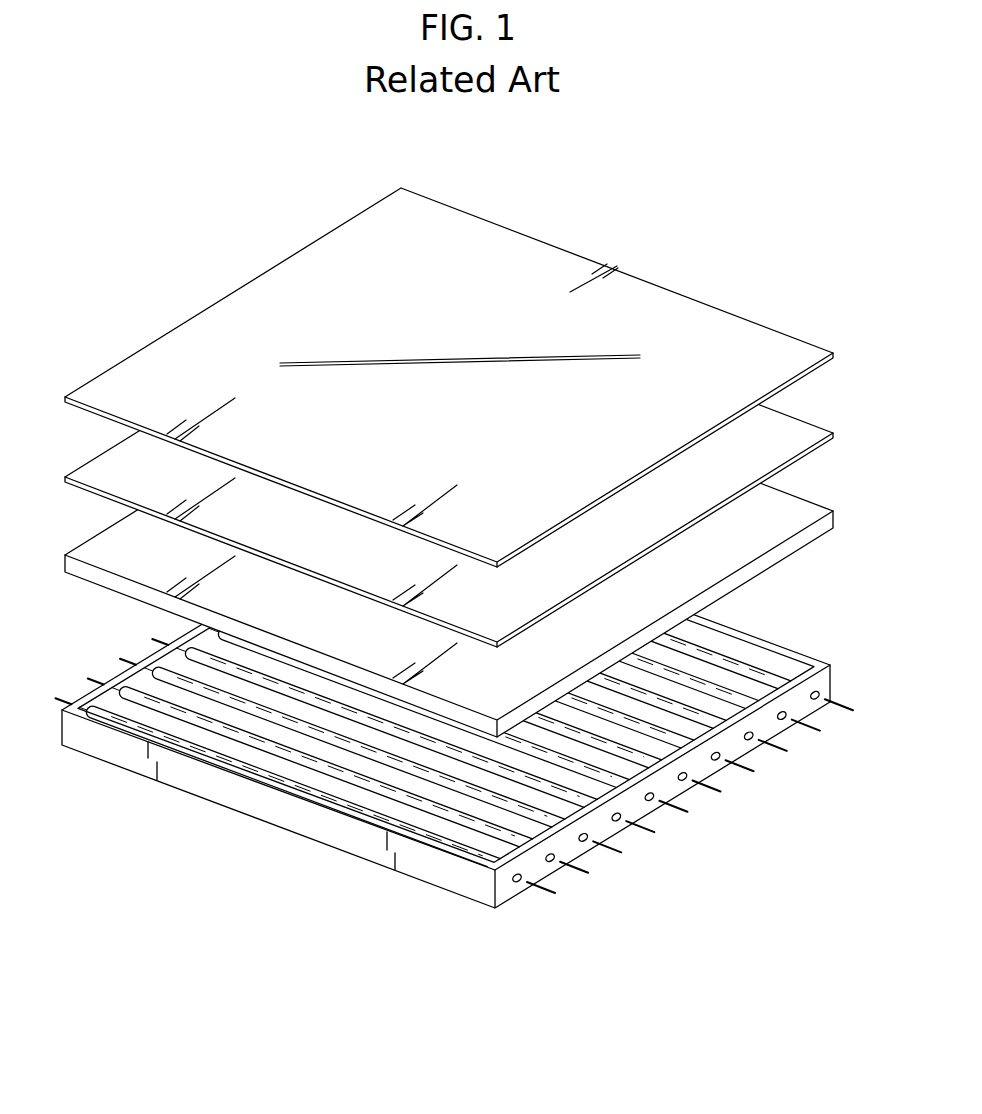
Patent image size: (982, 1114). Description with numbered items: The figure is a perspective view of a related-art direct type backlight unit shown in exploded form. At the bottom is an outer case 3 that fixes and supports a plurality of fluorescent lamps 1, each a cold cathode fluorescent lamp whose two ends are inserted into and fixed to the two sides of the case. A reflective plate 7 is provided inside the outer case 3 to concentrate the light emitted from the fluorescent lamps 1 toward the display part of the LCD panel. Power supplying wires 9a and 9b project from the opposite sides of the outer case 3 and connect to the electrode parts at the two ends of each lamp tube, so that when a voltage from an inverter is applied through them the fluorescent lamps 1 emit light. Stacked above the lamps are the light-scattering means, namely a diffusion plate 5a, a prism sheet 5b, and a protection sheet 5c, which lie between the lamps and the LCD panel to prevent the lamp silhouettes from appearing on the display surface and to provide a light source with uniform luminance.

The fluorescent lamp 1 is at (296, 758).
The outer case 3 is at (470, 887).
The diffusion plate 5a is at (783, 513).
The prism sheet 5b is at (783, 431).
The protection sheet 5c is at (783, 346).
The reflective plate 7 is at (424, 785).
The power supplying wire 9a is at (57, 703).
The power supplying wire 9b is at (544, 893).